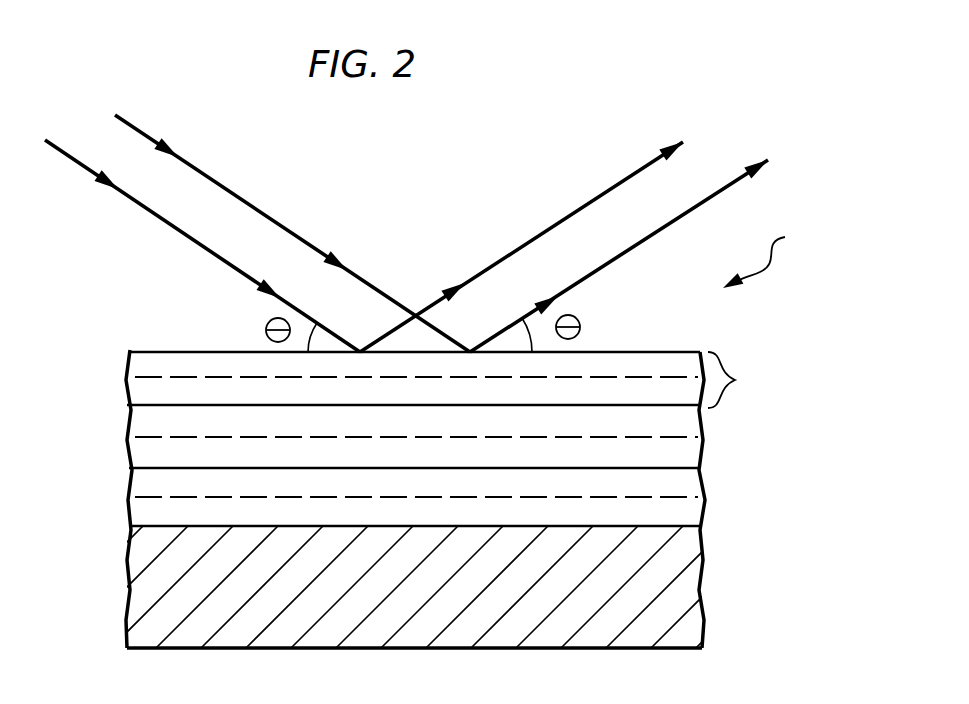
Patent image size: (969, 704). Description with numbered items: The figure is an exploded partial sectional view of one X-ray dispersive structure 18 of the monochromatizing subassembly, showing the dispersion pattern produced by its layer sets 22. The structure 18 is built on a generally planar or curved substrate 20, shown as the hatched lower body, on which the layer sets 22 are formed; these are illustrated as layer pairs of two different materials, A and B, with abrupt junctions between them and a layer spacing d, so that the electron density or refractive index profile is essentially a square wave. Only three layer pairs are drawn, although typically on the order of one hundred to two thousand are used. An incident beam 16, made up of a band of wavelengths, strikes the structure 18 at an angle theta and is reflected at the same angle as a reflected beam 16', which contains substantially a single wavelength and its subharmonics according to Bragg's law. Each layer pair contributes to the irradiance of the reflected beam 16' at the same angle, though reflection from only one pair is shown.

The incident beam 16 is at (257, 233).
The reflected beam 16' is at (564, 247).
The X-ray dispersive structure 18 is at (768, 255).
The substrate 20 is at (662, 598).
The layer sets 22 is at (658, 370).